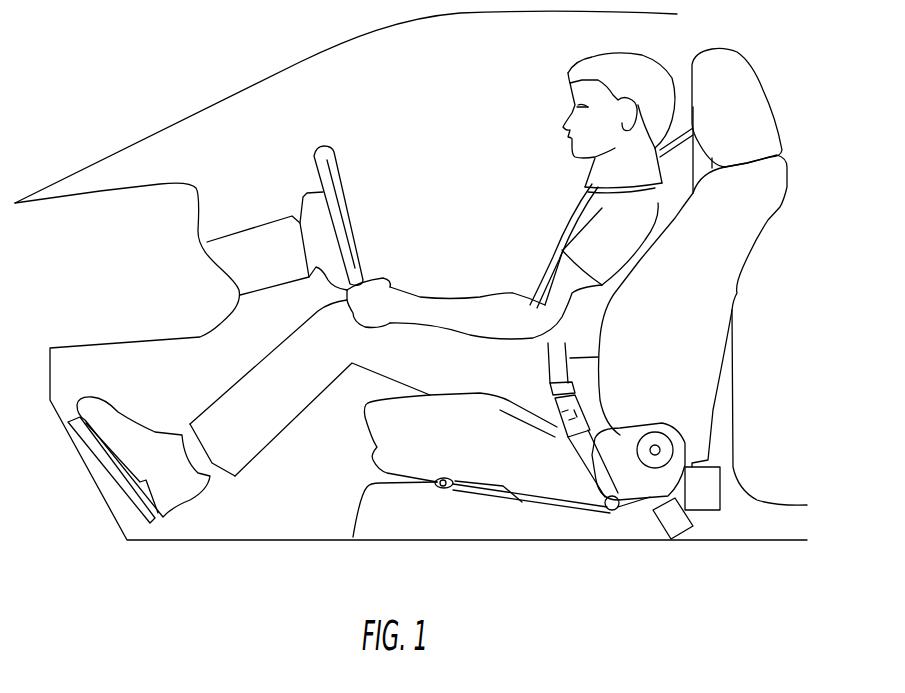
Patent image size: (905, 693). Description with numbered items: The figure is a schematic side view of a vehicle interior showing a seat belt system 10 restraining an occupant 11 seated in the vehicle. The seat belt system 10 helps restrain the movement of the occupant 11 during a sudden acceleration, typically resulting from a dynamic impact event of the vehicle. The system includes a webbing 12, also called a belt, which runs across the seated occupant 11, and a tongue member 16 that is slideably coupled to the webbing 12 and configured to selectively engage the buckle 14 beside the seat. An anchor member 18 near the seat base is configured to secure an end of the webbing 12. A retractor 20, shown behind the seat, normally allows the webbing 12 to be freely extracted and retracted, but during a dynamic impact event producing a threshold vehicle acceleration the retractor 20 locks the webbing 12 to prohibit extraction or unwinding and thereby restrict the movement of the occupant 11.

The seat belt system 10 is at (125, 74).
The occupant 11 is at (502, 308).
The webbing 12 is at (708, 456).
The buckle 14 is at (563, 432).
The tongue member 16 is at (557, 400).
The anchor member 18 is at (680, 528).
The retractor 20 is at (710, 488).